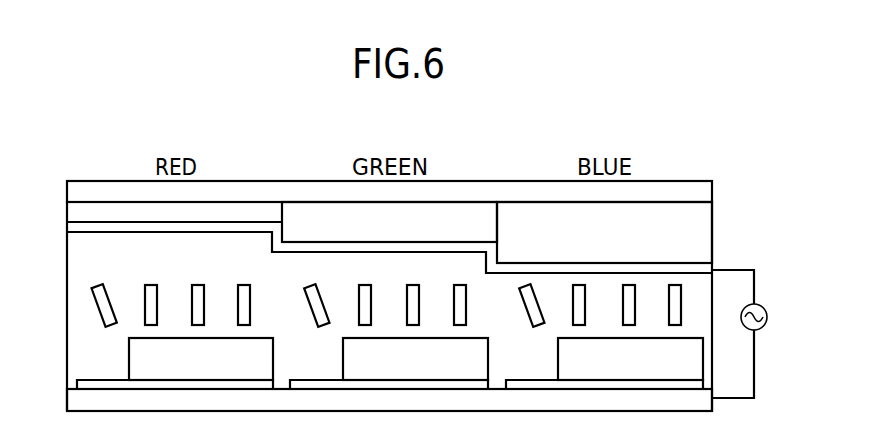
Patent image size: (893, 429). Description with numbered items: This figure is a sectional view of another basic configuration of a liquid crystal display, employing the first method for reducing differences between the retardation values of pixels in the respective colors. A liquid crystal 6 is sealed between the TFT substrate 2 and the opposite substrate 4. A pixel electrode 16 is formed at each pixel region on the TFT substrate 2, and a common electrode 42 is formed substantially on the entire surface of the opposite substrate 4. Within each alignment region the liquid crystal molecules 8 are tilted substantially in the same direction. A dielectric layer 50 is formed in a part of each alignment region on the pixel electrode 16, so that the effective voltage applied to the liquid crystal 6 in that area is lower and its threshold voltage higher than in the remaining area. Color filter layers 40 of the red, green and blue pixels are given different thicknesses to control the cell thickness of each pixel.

The TFT substrate 2 is at (703, 405).
The opposite substrate 4 is at (703, 191).
The liquid crystal 6 is at (703, 290).
The liquid crystal molecules 8 is at (669, 302).
The pixel electrode 16 is at (692, 387).
The color filter layers 40 is at (705, 213).
The common electrode 42 is at (713, 270).
The dielectric layer 50 is at (692, 363).